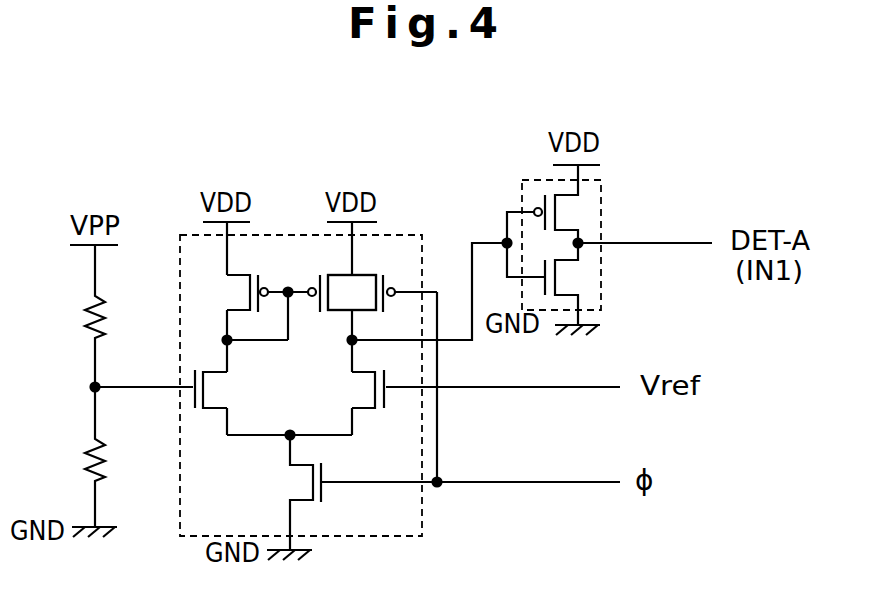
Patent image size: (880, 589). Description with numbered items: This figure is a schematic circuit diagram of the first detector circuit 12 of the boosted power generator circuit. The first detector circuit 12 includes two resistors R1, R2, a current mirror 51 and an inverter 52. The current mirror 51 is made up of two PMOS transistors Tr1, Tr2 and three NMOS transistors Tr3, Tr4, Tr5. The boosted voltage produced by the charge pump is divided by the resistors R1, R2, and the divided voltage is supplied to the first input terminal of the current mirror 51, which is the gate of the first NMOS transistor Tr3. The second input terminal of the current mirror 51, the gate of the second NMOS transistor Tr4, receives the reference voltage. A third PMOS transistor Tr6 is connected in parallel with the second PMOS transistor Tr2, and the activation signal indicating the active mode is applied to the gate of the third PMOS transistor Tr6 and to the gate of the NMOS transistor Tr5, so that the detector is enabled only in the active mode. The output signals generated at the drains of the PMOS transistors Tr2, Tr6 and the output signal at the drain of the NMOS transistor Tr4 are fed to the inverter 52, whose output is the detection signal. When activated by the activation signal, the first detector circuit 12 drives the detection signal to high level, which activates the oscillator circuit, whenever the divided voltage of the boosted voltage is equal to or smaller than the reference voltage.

The first detector circuit 12 is at (682, 154).
The current mirror 51 is at (290, 233).
The inverter 52 is at (520, 192).
The resistor R1 is at (103, 334).
The resistor R2 is at (103, 478).
The first PMOS transistor Tr1 is at (240, 270).
The second PMOS transistor Tr2 is at (338, 312).
The first NMOS transistor Tr3 is at (220, 400).
The second NMOS transistor Tr4 is at (368, 400).
The NMOS transistor Tr5 is at (302, 500).
The third PMOS transistor Tr6 is at (361, 272).